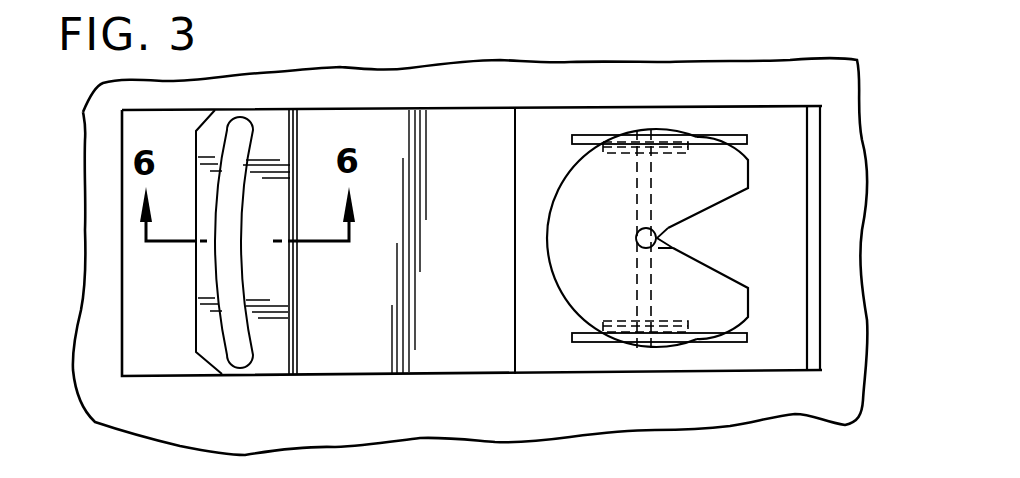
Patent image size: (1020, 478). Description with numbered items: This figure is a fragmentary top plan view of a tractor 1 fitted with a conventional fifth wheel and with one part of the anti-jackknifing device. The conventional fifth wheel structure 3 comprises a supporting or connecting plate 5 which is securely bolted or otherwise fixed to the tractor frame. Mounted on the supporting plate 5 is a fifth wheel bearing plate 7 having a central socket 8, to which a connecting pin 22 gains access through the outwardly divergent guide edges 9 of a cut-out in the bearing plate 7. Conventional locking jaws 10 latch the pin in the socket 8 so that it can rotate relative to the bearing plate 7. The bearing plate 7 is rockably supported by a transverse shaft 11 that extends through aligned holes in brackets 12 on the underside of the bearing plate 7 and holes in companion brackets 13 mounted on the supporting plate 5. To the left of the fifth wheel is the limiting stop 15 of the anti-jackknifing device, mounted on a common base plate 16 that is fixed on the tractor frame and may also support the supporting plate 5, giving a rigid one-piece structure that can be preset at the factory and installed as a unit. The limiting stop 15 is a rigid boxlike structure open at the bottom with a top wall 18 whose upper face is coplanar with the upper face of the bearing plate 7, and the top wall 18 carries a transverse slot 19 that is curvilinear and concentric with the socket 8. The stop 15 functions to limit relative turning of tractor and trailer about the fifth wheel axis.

The machine frame 1 is at (772, 86).
The fifth wheel structure 3 is at (629, 225).
The supporting plate 5 is at (790, 145).
The fifth wheel bearing plate 7 is at (568, 203).
The central socket 8 is at (636, 236).
The guide edges 9 is at (718, 208).
The locking jaws 10 is at (669, 246).
The transverse shaft 11 is at (653, 350).
The brackets 12 is at (617, 148).
The companion brackets 13 is at (592, 135).
The limiting stop 15 is at (300, 100).
The base plate 16 is at (138, 122).
The top wall 18 is at (257, 118).
The transverse slot 19 is at (229, 342).
The connecting pin 22 is at (636, 244).